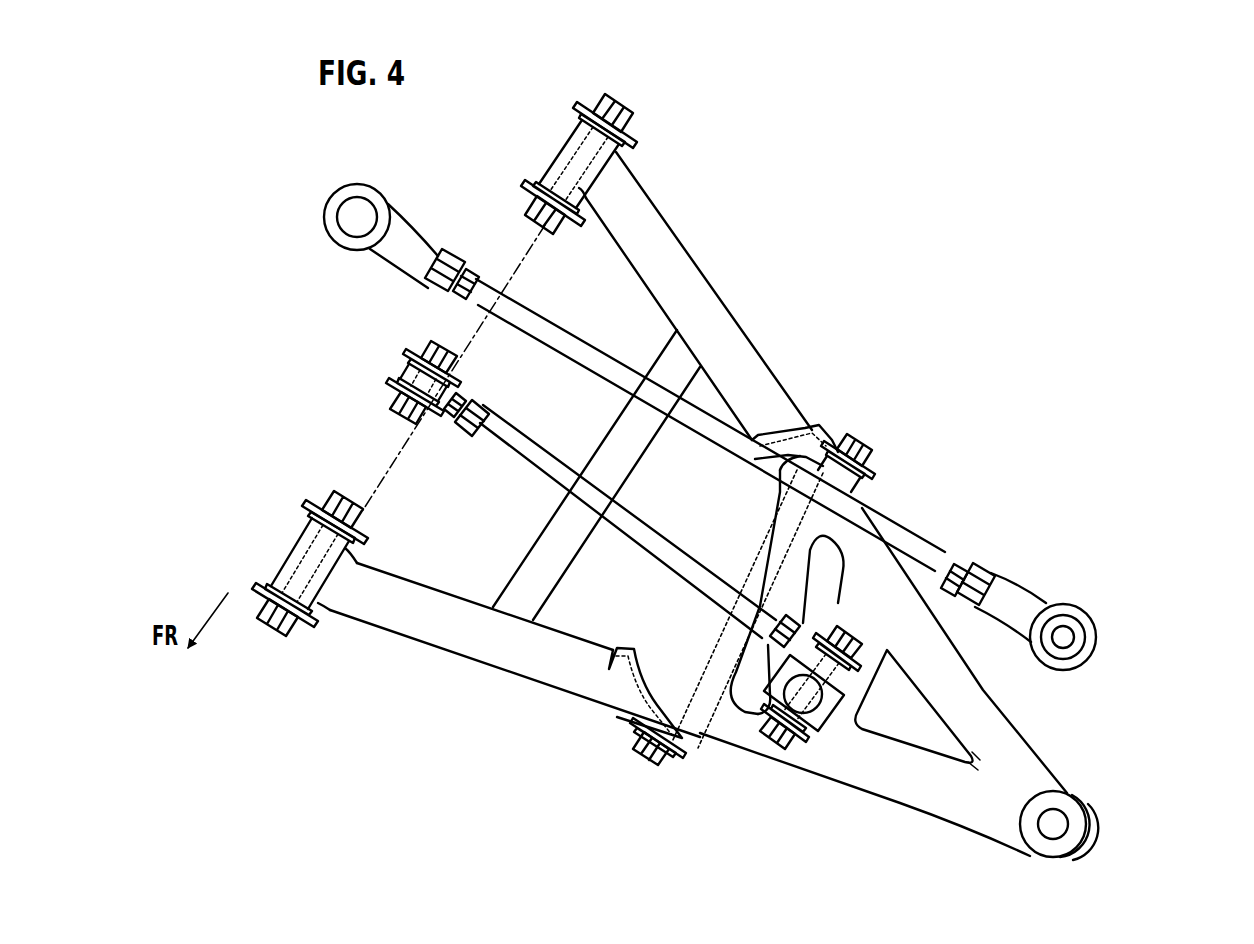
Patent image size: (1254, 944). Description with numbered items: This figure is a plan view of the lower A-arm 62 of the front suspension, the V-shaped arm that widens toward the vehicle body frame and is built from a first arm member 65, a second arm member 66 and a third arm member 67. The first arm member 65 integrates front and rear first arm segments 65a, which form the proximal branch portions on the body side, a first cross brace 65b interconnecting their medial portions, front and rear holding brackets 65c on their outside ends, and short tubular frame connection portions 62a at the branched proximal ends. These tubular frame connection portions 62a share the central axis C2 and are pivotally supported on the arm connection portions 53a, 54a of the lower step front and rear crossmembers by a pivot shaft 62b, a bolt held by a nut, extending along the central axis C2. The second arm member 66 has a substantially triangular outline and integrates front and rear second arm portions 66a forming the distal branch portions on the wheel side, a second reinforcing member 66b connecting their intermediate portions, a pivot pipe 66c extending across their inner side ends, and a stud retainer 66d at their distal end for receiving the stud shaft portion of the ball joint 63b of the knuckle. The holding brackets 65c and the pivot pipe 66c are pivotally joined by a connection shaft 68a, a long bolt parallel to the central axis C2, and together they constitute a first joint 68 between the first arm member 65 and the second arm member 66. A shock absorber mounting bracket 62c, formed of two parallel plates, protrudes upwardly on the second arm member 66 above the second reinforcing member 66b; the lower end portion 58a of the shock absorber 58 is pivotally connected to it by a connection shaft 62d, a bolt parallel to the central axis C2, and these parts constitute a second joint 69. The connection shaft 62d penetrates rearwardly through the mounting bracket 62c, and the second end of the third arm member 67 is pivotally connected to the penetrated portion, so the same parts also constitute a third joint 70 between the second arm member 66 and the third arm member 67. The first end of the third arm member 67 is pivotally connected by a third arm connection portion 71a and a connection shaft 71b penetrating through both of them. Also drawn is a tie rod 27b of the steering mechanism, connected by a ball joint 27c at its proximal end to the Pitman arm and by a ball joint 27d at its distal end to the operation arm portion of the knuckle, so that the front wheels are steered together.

The tie rod 27b is at (588, 346).
The ball joint 27c is at (326, 198).
The ball joint 27d is at (1097, 632).
The arm connection portion 53a is at (370, 541).
The arm connection portion 54a is at (640, 141).
The shock absorber 58 is at (728, 767).
The lower end portion 58a is at (740, 706).
The lower A-arm 62 is at (736, 498).
The tubular frame connection portion 62a is at (634, 156).
The pivot shaft 62b is at (532, 211).
The shock absorber mounting bracket 62c is at (790, 750).
The connection shaft 62d is at (776, 750).
The ball joint 63b is at (1088, 830).
The first arm member 65 is at (556, 430).
The first arm segment 65a is at (731, 316).
The first cross brace 65b is at (540, 552).
The holding bracket 65c is at (820, 432).
The second arm member 66 is at (920, 679).
The second arm portion 66a is at (983, 692).
The second reinforcing member 66b is at (885, 650).
The pivot pipe 66c is at (724, 650).
The stud retainer 66d is at (1128, 825).
The third arm member 67 is at (536, 489).
The first joint 68 is at (687, 748).
The connection shaft 68a is at (646, 758).
The second joint 69 is at (810, 754).
The third joint 70 is at (864, 657).
The third arm connection portion 71a is at (456, 398).
The connection shaft 71b is at (393, 401).
The central axis C2 is at (385, 467).